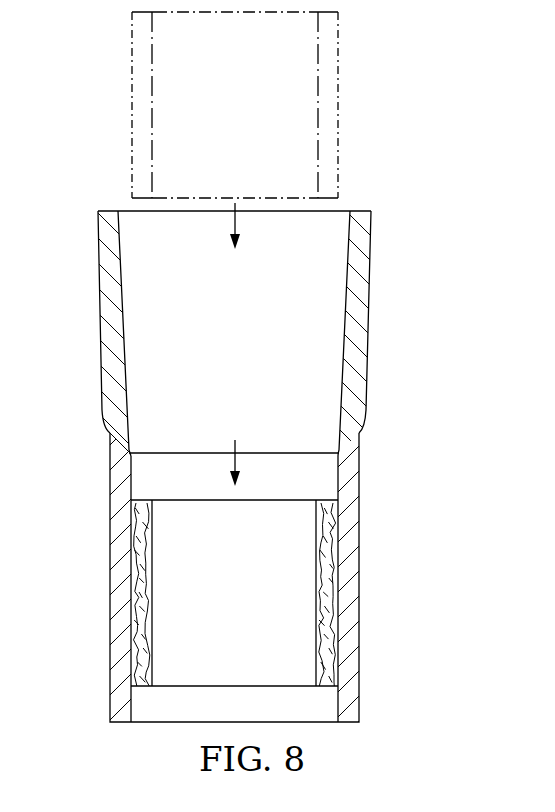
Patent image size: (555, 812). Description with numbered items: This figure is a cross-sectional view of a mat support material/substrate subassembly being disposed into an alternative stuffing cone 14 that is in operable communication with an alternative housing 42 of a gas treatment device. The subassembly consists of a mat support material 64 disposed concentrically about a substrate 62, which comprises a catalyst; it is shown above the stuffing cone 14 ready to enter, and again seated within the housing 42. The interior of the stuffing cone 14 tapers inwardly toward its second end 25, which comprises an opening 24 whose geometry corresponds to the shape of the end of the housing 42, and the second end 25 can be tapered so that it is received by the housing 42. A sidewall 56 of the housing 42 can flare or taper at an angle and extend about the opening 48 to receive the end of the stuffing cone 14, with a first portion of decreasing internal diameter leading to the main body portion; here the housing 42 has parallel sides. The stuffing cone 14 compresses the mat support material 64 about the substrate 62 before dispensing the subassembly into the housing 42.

The stuffing cone 14 is at (372, 299).
The opening 24 is at (293, 451).
The second end 25 is at (135, 401).
The housing 42 is at (363, 528).
The opening 48 is at (179, 453).
The sidewall 56 is at (88, 432).
The substrate 62 is at (246, 88).
The mat support material 64 is at (137, 133).